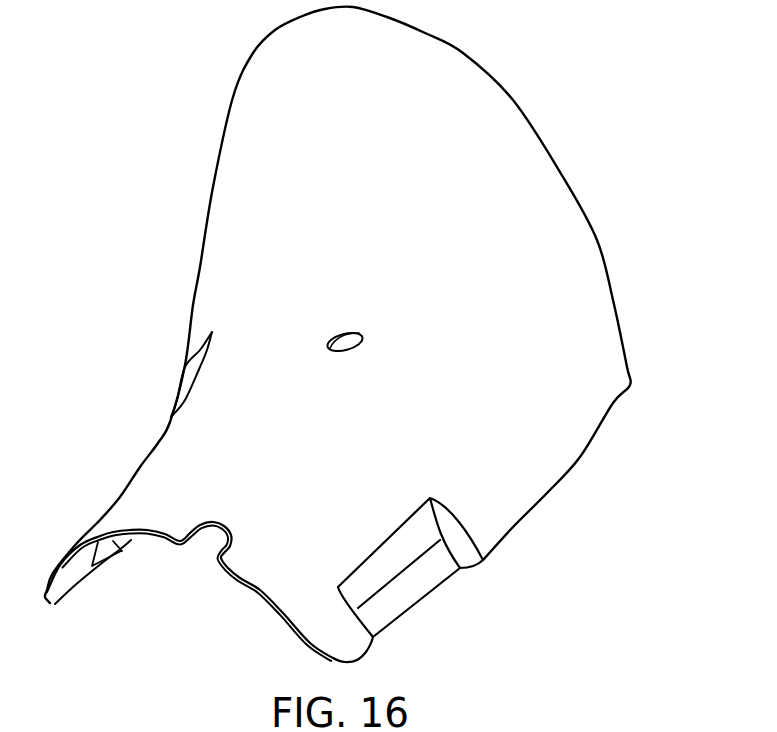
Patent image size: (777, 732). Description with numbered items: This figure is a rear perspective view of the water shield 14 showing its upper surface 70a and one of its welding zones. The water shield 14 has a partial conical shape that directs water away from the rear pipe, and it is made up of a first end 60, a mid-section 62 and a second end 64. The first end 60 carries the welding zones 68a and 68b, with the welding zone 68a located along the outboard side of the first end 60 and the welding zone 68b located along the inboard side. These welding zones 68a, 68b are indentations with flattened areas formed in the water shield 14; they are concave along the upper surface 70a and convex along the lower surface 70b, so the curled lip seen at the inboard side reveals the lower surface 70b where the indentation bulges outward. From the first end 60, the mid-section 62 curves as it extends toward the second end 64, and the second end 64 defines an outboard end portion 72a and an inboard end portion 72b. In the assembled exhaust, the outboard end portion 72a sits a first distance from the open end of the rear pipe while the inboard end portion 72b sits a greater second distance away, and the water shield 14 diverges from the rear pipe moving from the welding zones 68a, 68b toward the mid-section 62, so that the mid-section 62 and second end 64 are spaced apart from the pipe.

The water shield 14 is at (354, 331).
The first end 60 is at (268, 558).
The mid-section 62 is at (238, 288).
The second end 64 is at (448, 88).
The welding zone 68a is at (412, 590).
The welding zone 68b is at (115, 543).
The upper surface 70a is at (537, 435).
The lower surface 70b is at (65, 578).
The outboard end portion 72a is at (567, 255).
The inboard end portion 72b is at (230, 107).